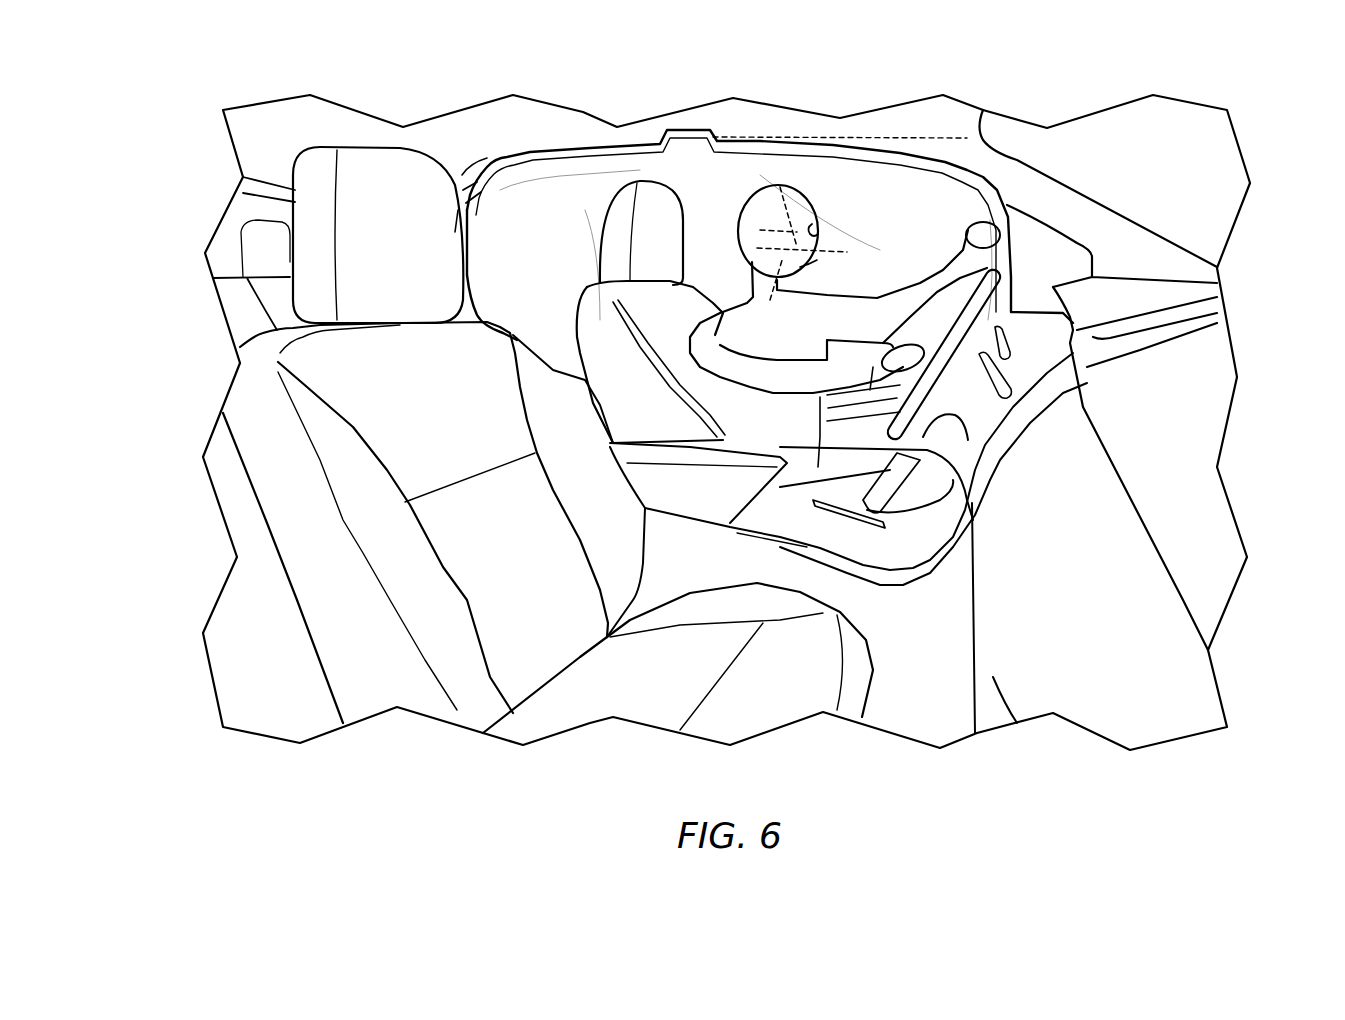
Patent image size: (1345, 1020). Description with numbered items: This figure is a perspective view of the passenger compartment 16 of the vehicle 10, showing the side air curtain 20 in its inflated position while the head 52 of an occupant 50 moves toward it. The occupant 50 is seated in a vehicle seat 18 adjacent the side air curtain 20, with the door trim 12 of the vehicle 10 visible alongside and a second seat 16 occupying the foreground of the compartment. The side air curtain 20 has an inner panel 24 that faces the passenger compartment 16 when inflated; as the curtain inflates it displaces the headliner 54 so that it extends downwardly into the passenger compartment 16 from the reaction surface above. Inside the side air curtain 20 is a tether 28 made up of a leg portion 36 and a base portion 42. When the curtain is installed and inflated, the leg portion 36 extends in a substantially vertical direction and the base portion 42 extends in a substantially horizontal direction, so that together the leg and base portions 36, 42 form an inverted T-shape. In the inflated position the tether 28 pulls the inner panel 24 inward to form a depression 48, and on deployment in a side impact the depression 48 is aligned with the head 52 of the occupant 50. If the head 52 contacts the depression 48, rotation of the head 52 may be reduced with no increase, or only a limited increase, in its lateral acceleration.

The vehicle 10 is at (1293, 130).
The door 12 is at (1188, 379).
The passenger compartment 16 is at (509, 563).
The vehicle seat 18 is at (577, 317).
The side air curtain 20 is at (471, 174).
The inner panel 24 is at (580, 193).
The tether 28 is at (778, 227).
The leg portion 36 is at (792, 207).
The base portion 42 is at (783, 257).
The depression 48 is at (822, 237).
The occupant 50 is at (725, 297).
The head 52 is at (742, 198).
The headliner 54 is at (768, 118).